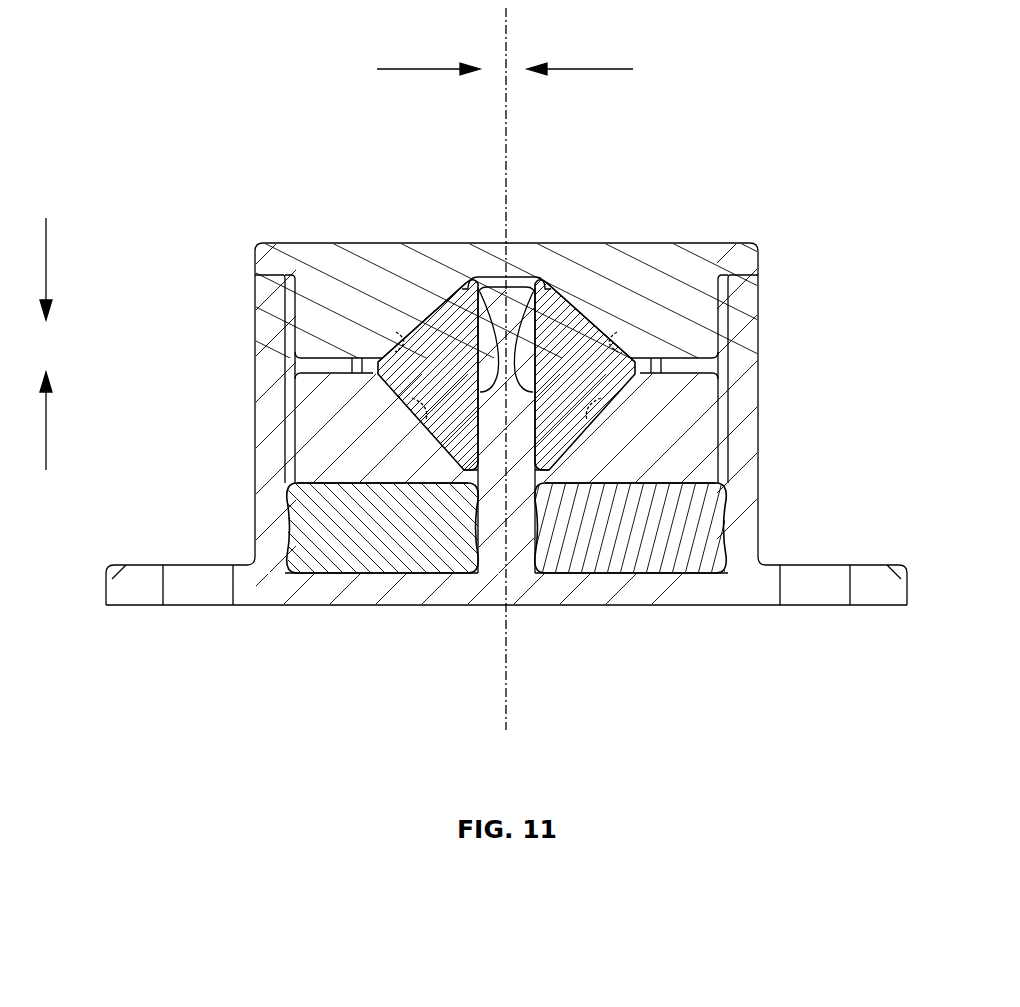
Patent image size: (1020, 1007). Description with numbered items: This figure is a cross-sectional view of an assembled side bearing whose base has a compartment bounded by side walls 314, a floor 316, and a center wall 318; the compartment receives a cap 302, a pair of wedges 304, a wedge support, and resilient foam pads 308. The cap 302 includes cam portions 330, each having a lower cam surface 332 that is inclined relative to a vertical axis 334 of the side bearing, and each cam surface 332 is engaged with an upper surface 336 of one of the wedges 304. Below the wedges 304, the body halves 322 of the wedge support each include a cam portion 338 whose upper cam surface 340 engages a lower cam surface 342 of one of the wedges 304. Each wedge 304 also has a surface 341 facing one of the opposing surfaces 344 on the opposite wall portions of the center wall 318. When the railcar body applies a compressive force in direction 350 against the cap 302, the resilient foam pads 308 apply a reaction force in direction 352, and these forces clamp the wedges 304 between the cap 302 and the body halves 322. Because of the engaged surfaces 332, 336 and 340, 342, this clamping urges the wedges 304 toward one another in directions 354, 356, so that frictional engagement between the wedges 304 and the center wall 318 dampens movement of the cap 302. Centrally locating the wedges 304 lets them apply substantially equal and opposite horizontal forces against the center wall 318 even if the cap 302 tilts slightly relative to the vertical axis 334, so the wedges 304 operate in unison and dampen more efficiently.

The cap 302 is at (680, 268).
The wedges 304 is at (430, 316).
The resilient foam pads 308 is at (423, 557).
The side walls 314 is at (756, 422).
The floor 316 is at (410, 605).
The center wall 318 is at (517, 560).
The body halves 322 is at (355, 368).
The cam portions 330 is at (318, 318).
The lower cam surface 332 is at (440, 300).
The vertical axis 334 is at (506, 128).
The upper surface 336 is at (400, 345).
The cam portion 338 is at (645, 440).
The upper cam surface 340 is at (408, 432).
The surface 341 is at (408, 440).
The lower cam surface 342 is at (420, 408).
The opposing surfaces 344 is at (496, 312).
The direction 350 is at (46, 262).
The direction 352 is at (46, 416).
The direction 354 is at (432, 69).
The direction 356 is at (588, 69).